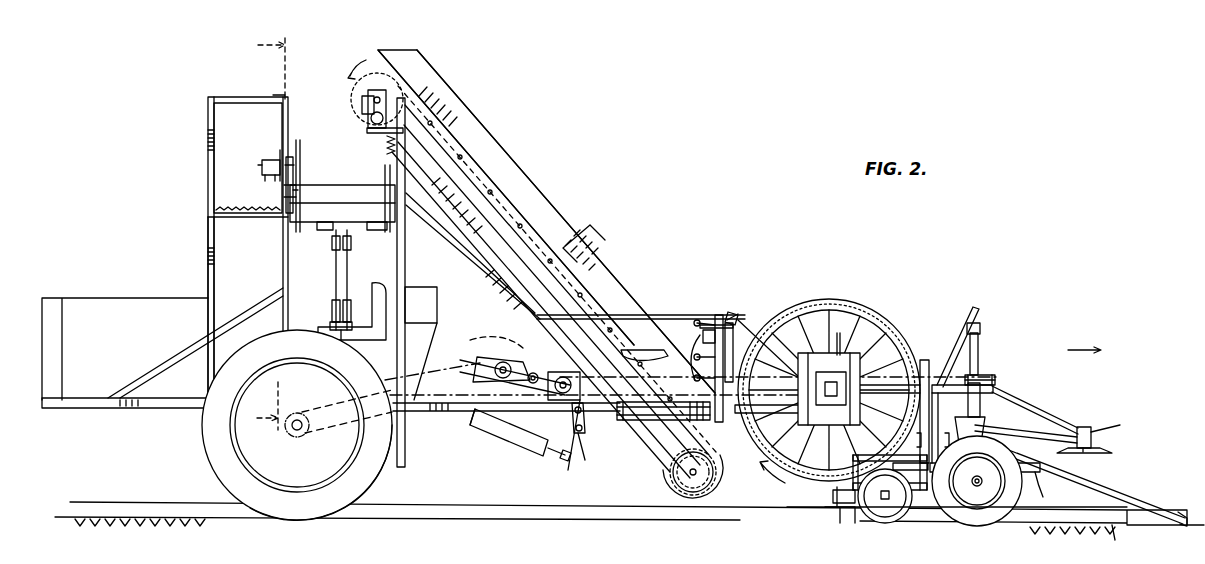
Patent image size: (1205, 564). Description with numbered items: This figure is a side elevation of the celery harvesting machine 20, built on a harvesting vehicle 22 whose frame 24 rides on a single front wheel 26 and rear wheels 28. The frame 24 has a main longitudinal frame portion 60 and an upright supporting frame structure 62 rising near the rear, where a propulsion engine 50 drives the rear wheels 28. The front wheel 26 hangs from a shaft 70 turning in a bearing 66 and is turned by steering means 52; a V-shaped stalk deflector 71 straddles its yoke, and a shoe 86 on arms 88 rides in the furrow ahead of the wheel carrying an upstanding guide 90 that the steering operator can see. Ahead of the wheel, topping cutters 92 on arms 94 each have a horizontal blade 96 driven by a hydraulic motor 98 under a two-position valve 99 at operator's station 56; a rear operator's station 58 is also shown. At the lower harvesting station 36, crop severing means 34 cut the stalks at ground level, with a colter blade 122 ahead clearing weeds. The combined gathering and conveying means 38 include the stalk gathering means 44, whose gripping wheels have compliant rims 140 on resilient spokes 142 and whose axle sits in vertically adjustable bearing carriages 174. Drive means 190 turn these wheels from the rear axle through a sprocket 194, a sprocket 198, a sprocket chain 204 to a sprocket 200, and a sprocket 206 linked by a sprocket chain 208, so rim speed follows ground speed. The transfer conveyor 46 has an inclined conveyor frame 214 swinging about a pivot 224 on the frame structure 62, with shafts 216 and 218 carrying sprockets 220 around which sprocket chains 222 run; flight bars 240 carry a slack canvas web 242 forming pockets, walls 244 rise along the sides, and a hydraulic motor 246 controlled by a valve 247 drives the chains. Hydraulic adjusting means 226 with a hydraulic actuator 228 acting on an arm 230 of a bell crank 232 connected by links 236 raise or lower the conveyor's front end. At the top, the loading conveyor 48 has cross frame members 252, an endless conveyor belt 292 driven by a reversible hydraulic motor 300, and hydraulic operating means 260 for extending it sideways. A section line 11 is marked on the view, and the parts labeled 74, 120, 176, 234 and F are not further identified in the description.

The section line 11- 11 is at (253, 247).
The celery harvesting machine 20 is at (696, 186).
The harvesting vehicle 22 is at (202, 452).
The frame 24 is at (90, 410).
The front wheel 26 is at (985, 526).
The rear wheels 28 is at (283, 512).
The crop severing means 34 is at (856, 518).
The harvesting station 36 is at (813, 517).
The gathering and conveying means 38 is at (742, 275).
The stalk gathering means 44 is at (829, 366).
The transfer conveyor 46 is at (530, 199).
The loading conveyor 48 is at (313, 104).
The propulsion engine 50 is at (100, 297).
The steering means 52 is at (997, 367).
The operator's station 56 is at (635, 345).
The rear operator's station 58 is at (214, 170).
The main longitudinal frame portion 60 is at (462, 262).
The upright supporting frame structure 62 is at (201, 268).
The bearing 66 is at (965, 400).
The shaft 70 is at (982, 345).
The stalk deflector 71 is at (1043, 480).
The link 74 is at (978, 296).
The shoe 86 is at (1183, 512).
The arms 88 is at (1110, 492).
The upstanding guide 90 is at (1204, 392).
The topping cutters 92 is at (1088, 411).
The arms 94 is at (1043, 408).
The horizontal blade 96 is at (1110, 450).
The hydraulic motor 98 is at (1100, 428).
The two-position valve 99 is at (700, 318).
The post 120 is at (735, 312).
The colter blade 122 is at (902, 512).
The rims 140 is at (790, 300).
The spokes 142 is at (887, 311).
The bearing carriages 174 is at (862, 380).
The direction of rotation 176 is at (765, 475).
The drive means 190 is at (570, 380).
The sprocket 194 is at (840, 462).
The sprocket 198 is at (558, 400).
The sprocket 200 is at (480, 357).
The sprocket chain 204 is at (528, 370).
The sprocket 206 is at (505, 345).
The sprocket chain 208 is at (470, 370).
The conveyor frame 214 is at (499, 146).
The shaft 216 is at (690, 478).
The shaft 218 is at (385, 90).
The sprockets 220 is at (362, 105).
The sprocket chains 222 is at (592, 255).
The pivot 224 is at (445, 115).
The hydraulic adjusting means 226 is at (509, 461).
The hydraulic actuator 228 is at (485, 435).
The arm 230 is at (575, 458).
The bell crank 232 is at (560, 456).
The link 234 is at (592, 440).
The links 236 is at (583, 415).
The flight bars 240 is at (495, 176).
The web 242 is at (448, 225).
The walls 244 is at (548, 226).
The hydraulic motor 246 is at (385, 138).
The valve 247 is at (690, 320).
The cross frame members 252 is at (380, 230).
The hydraulic operating means 260 is at (291, 283).
The endless conveyor belt 292 is at (362, 184).
The reversible hydraulic motor 300 is at (272, 158).
The furrow F is at (1115, 542).